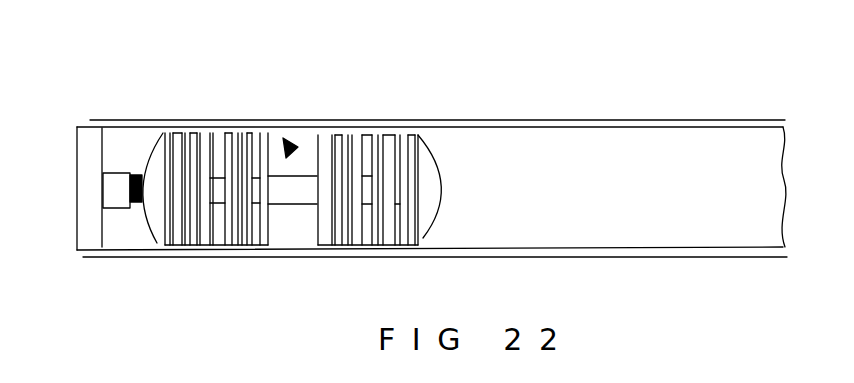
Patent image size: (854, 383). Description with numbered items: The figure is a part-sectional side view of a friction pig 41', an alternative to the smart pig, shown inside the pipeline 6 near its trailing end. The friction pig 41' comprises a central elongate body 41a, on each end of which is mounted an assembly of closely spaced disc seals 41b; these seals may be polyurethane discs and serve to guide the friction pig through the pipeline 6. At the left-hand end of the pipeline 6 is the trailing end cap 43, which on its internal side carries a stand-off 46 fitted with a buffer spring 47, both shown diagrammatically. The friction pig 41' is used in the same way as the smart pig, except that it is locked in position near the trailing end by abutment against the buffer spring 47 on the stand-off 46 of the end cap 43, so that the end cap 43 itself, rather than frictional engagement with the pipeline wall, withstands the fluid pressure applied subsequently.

The trailing end cap 43 is at (93, 193).
The stand-off 46 is at (118, 180).
The buffer spring 47 is at (143, 175).
The pipeline 6 is at (193, 125).
The friction pig 41' is at (330, 146).
The central elongate body 41a is at (287, 193).
The assembly of closely spaced disc seals 41b is at (377, 140).